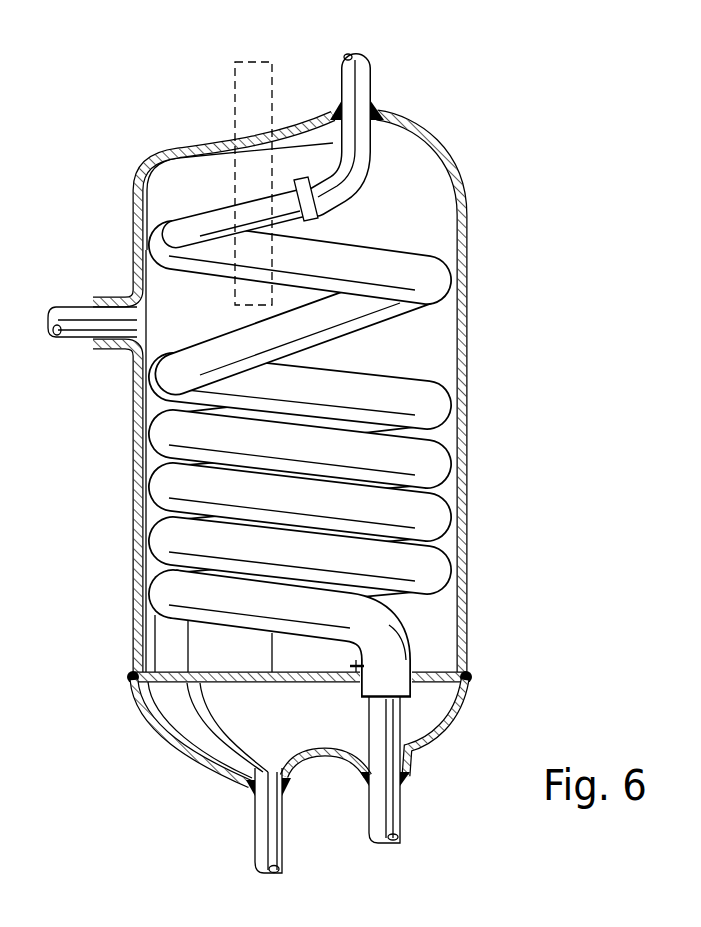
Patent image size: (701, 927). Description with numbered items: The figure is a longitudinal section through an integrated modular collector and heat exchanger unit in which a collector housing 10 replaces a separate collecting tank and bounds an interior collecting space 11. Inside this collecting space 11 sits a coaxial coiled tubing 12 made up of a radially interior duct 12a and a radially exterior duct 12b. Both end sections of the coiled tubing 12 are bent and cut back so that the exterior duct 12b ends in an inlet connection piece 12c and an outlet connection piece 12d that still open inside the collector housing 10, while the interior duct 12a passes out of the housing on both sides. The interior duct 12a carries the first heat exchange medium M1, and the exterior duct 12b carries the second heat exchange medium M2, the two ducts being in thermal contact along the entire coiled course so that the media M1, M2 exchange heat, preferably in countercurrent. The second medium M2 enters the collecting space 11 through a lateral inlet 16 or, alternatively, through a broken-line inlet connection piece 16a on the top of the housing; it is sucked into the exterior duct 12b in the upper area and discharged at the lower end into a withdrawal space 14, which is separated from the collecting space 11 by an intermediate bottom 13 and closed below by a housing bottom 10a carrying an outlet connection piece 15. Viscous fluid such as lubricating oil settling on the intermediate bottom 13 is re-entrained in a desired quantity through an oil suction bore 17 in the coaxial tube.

The collector housing 10 is at (140, 437).
The lower housing part 10a is at (216, 758).
The interior collecting space 11 is at (435, 341).
The coaxial coiled tubing 12 is at (430, 465).
The radially interior duct 12a is at (368, 93).
The radially exterior duct 12b is at (308, 180).
The inlet connection piece 12c is at (393, 666).
The outlet connection piece 12d is at (296, 190).
The intermediate bottom 13 is at (163, 722).
The withdrawal space 14 is at (254, 716).
The outlet connection piece 15 is at (257, 852).
The lateral inlet 16 is at (113, 299).
The inlet connection piece 16a is at (240, 95).
The oil suction bore 17 is at (355, 666).
The first heat exchange medium M1 is at (358, 80).
The second heat exchange medium M2 is at (258, 76).